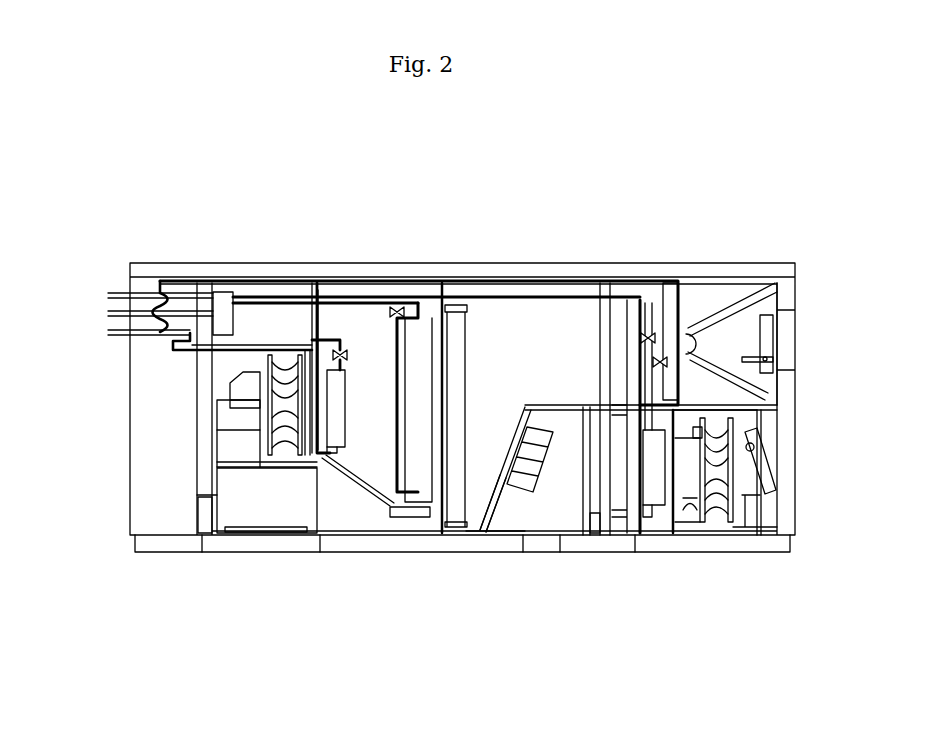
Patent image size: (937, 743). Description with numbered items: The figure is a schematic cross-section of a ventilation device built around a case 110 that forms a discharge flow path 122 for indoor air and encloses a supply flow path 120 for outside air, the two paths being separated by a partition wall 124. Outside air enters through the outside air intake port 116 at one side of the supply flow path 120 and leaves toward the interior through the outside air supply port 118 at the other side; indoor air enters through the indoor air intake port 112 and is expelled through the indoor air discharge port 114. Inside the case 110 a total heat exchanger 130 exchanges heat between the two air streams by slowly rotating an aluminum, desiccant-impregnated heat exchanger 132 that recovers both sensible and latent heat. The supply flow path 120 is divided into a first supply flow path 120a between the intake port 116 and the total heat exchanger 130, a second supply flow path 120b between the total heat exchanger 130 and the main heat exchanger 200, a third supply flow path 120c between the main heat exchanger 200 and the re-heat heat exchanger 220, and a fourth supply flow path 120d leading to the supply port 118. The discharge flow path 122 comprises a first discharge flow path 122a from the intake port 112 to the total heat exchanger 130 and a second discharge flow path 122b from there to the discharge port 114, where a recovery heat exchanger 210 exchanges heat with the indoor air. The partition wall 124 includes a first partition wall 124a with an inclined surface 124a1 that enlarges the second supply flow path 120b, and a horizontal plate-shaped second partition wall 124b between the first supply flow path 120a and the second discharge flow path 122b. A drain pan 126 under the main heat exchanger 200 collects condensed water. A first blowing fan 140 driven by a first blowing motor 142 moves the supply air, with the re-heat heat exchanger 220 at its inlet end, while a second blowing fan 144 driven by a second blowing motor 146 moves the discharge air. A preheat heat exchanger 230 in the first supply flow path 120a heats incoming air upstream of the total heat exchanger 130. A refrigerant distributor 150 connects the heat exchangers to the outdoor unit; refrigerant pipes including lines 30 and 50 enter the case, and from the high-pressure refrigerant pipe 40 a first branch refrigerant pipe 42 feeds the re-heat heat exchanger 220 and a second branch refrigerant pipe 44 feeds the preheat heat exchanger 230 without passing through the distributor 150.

The case 110 is at (684, 276).
The indoor air intake port 112 is at (547, 543).
The indoor air discharge port 114 is at (713, 410).
The outside air intake port 116 is at (789, 347).
The outside air supply port 118 is at (296, 542).
The supply flow path 120 is at (582, 351).
The first supply flow path 120a is at (762, 322).
The second supply flow path 120b is at (531, 354).
The third supply flow path 120c is at (363, 385).
The fourth supply flow path 120d is at (240, 483).
The discharge flow path 122 is at (577, 453).
The first discharge flow path 122a is at (517, 497).
The second discharge flow path 122b is at (692, 515).
The partition wall 124 is at (765, 403).
The first partition wall 124a is at (550, 412).
The inclined surface 124a1 is at (506, 505).
The second partition wall 124b is at (758, 535).
The drain pan 126 is at (412, 510).
The total heat exchanger 130 is at (627, 277).
The heat exchanger 132 is at (620, 475).
The first blowing fan 140 is at (287, 420).
The first blowing motor 142 is at (220, 402).
The second blowing fan 144 is at (720, 420).
The second blowing motor 146 is at (747, 443).
The refrigerant distributor 150 is at (222, 305).
The main heat exchanger 200 is at (426, 356).
The recovery heat exchanger 210 is at (655, 477).
The re-heat heat exchanger 220 is at (337, 385).
The preheat heat exchanger 230 is at (724, 292).
The liquid pipe 30 is at (107, 313).
The high-pressure refrigerant pipe 40 is at (107, 333).
The first branch refrigerant pipe 42 is at (187, 350).
The second branch refrigerant pipe 44 is at (180, 279).
The gas pipe 50 is at (107, 295).